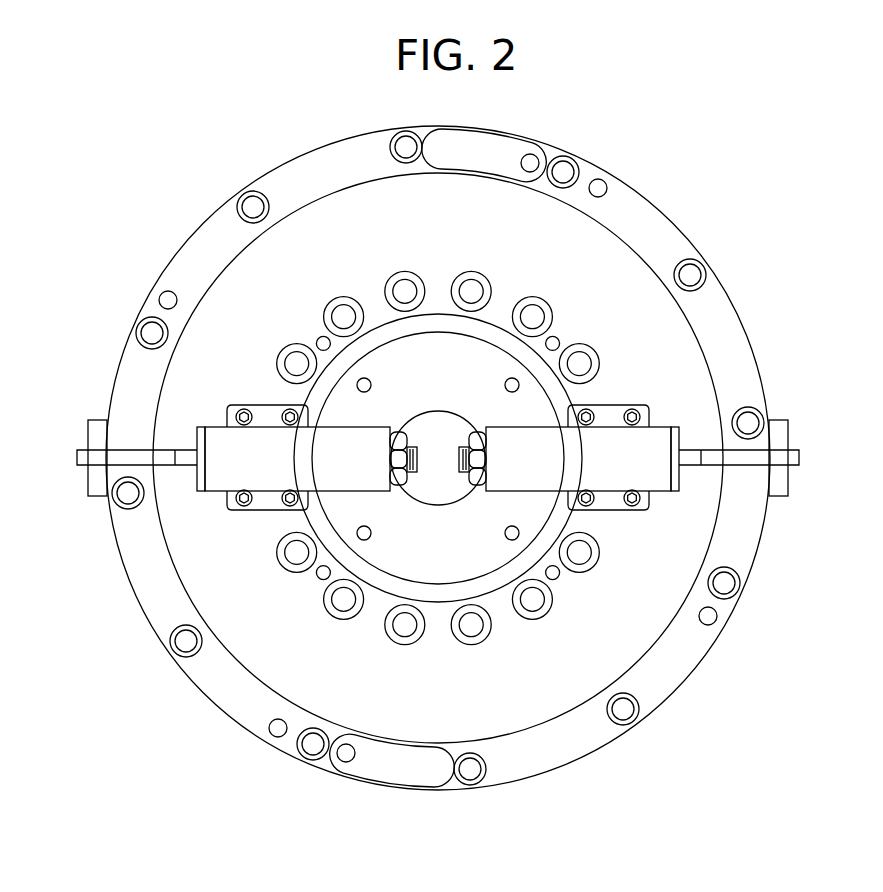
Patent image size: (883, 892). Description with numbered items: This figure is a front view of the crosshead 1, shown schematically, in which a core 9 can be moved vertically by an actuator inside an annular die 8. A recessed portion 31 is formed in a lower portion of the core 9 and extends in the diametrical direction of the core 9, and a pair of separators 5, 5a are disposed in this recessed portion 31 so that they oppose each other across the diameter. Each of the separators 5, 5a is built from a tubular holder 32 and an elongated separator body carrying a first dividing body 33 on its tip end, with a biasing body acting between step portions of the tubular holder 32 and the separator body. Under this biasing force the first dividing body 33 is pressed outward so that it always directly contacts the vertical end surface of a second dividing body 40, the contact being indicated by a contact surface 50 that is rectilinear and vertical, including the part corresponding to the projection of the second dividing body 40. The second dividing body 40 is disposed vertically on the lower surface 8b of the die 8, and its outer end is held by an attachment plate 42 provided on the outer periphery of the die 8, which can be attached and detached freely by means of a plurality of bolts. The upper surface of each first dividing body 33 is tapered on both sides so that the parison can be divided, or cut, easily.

The crosshead 1 is at (722, 251).
The separator 5 is at (252, 522).
The separator 5a is at (618, 522).
The annular die 8 is at (613, 212).
The lower surface of the die 8b is at (737, 528).
The core 9 is at (592, 292).
The recessed portion 31 is at (255, 405).
The tubular holder 32 is at (242, 455).
The first dividing body 33 is at (187, 456).
The second dividing body 40 is at (105, 447).
The attachment plate 42 is at (790, 480).
The contact surface 50 is at (130, 458).